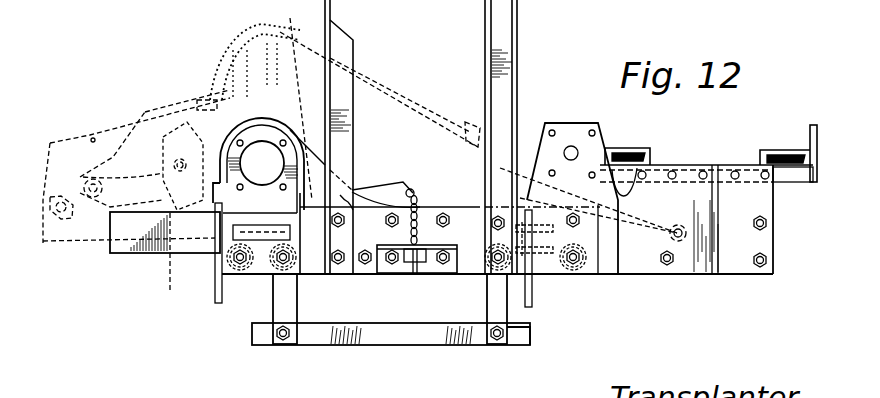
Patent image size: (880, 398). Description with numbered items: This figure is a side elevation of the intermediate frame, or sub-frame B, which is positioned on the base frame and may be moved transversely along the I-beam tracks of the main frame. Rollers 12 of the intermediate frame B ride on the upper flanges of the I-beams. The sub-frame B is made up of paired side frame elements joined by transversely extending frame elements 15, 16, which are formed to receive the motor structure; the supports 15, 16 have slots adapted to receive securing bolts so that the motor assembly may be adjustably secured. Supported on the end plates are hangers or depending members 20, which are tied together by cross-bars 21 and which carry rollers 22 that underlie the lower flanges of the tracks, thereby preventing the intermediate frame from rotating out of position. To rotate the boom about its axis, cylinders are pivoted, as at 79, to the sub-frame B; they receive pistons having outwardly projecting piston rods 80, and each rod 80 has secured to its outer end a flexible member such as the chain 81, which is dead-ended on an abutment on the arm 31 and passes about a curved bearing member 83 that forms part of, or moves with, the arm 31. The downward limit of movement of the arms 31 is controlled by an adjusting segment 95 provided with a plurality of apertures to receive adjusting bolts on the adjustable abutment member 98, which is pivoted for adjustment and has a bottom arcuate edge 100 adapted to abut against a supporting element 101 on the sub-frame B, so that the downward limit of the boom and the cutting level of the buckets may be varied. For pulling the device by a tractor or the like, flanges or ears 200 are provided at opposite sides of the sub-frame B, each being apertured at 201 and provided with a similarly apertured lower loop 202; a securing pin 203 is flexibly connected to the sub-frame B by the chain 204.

The rollers 12 is at (257, 265).
The transversely extending frame element 15 is at (770, 155).
The transversely extending frame element 16 is at (625, 152).
The hangers 20 is at (288, 302).
The cross-bars 21 is at (397, 337).
The rollers 22 is at (283, 345).
The arm 31 is at (85, 133).
The pivot 79 is at (522, 143).
The piston rod 80 is at (390, 83).
The chain 81 is at (298, 100).
The curved bearing member 83 is at (255, 54).
The adjusting segment 95 is at (120, 153).
The adjustable abutment member 98 is at (135, 182).
The bottom arcuate edge 100 is at (129, 263).
The supporting element 101 is at (123, 250).
The flanges or ears 200 is at (437, 245).
The aperture 201 is at (362, 137).
The lower loop 202 is at (408, 262).
The securing pin 203 is at (421, 243).
The chain 204 is at (417, 192).
The intermediate frame B is at (737, 284).